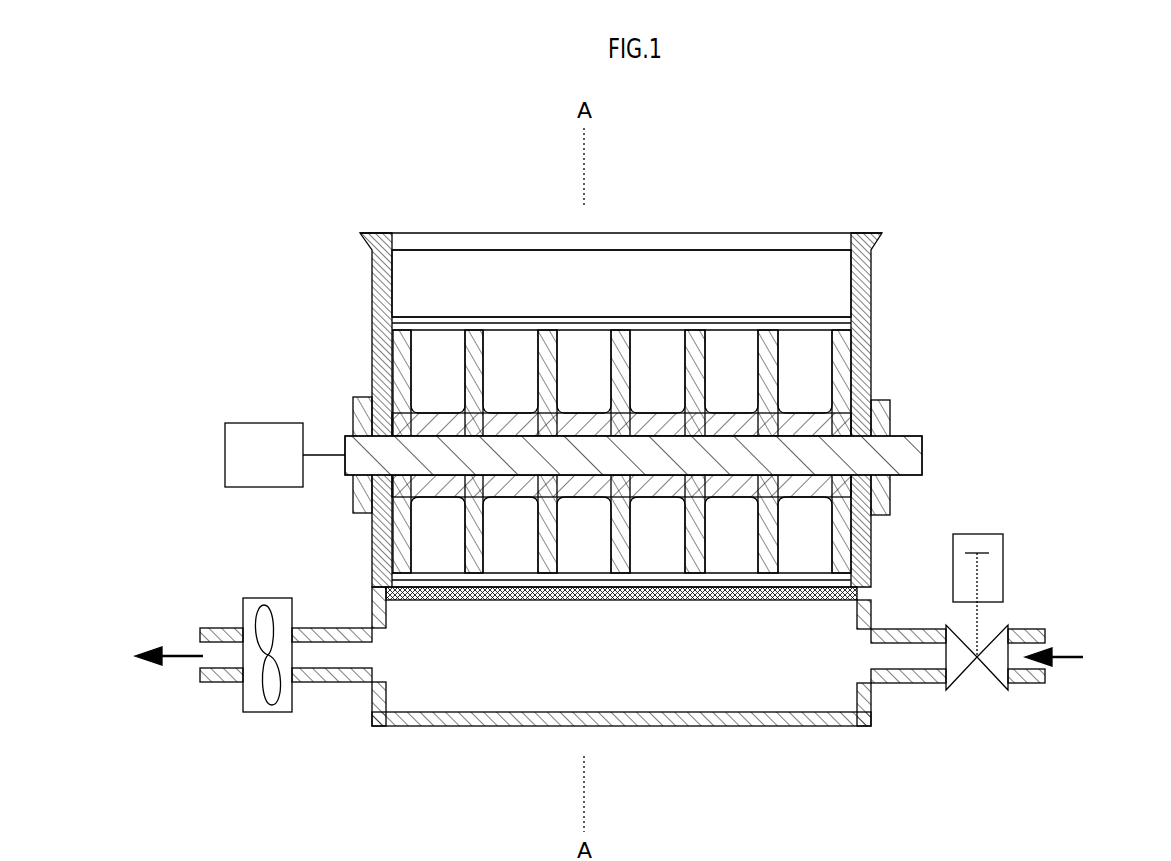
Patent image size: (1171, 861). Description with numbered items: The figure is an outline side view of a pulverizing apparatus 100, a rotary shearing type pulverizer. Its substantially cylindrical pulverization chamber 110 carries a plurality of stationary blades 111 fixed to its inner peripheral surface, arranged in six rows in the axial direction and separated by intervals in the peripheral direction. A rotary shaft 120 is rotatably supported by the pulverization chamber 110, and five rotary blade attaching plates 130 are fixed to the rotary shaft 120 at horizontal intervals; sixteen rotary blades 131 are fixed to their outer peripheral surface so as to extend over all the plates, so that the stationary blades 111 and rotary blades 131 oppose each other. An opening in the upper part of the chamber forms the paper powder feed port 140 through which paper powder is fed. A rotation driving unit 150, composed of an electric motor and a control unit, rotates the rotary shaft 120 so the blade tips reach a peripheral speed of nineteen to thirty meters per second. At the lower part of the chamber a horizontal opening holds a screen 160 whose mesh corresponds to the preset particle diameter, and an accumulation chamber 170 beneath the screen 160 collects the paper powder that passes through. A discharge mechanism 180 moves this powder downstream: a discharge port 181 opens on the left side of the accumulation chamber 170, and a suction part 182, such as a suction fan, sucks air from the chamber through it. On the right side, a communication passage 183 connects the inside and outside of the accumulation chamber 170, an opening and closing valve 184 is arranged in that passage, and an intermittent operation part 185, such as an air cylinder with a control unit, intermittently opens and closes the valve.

The pulverizing apparatus 100 is at (874, 160).
The pulverization chamber 110 is at (873, 340).
The stationary blades 111 is at (781, 265).
The rotary shaft 120 is at (895, 438).
The rotary blade attaching plates 130 is at (474, 330).
The rotary blades 131 is at (523, 322).
The paper powder feed port 140 is at (375, 232).
The rotation driving unit 150 is at (262, 423).
The screen 160 is at (528, 600).
The accumulation chamber 170 is at (791, 727).
The discharge mechanism 180 is at (368, 760).
The discharge port 181 is at (348, 683).
The suction part 182 is at (268, 712).
The communication passage 183 is at (1006, 683).
The opening and closing valve 184 is at (1000, 632).
The intermittent operation part 185 is at (1003, 570).